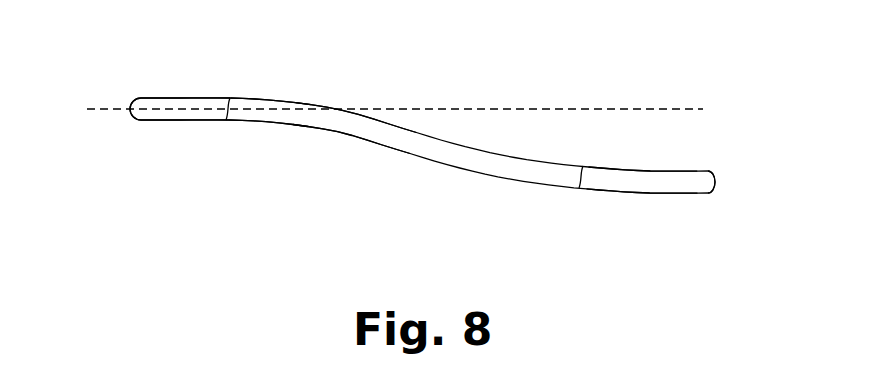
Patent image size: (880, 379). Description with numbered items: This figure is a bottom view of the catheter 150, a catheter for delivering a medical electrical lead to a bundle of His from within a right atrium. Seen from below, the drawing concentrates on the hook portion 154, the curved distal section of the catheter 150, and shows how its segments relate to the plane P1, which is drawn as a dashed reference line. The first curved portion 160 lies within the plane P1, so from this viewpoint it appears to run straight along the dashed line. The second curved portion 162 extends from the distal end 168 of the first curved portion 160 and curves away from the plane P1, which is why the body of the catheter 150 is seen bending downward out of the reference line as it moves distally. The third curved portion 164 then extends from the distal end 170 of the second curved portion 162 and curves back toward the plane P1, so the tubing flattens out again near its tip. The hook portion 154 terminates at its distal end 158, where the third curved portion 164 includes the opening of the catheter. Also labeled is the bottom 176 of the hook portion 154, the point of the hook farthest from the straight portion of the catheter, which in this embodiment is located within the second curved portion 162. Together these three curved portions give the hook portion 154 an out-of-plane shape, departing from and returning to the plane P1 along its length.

The catheter 150 is at (492, 243).
The hook portion 154 is at (295, 133).
The distal end of the hook portion 158 is at (743, 227).
The first curved portion 160 is at (148, 177).
The second curved portion 162 is at (383, 213).
The third curved portion 164 is at (625, 267).
The distal end of the first curved portion 168 is at (215, 97).
The distal end of the second curved portion 170 is at (610, 142).
The bottom of the hook portion 176 is at (303, 120).
The plane P1 is at (668, 108).